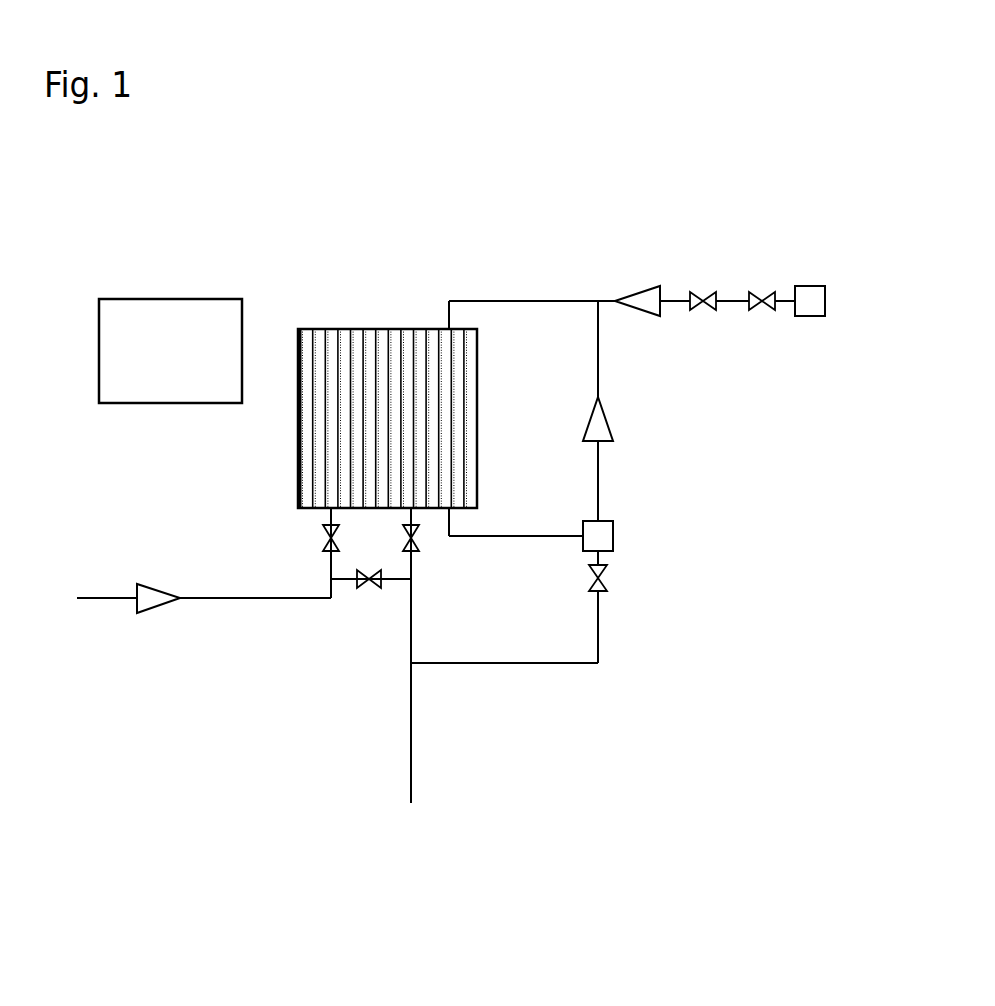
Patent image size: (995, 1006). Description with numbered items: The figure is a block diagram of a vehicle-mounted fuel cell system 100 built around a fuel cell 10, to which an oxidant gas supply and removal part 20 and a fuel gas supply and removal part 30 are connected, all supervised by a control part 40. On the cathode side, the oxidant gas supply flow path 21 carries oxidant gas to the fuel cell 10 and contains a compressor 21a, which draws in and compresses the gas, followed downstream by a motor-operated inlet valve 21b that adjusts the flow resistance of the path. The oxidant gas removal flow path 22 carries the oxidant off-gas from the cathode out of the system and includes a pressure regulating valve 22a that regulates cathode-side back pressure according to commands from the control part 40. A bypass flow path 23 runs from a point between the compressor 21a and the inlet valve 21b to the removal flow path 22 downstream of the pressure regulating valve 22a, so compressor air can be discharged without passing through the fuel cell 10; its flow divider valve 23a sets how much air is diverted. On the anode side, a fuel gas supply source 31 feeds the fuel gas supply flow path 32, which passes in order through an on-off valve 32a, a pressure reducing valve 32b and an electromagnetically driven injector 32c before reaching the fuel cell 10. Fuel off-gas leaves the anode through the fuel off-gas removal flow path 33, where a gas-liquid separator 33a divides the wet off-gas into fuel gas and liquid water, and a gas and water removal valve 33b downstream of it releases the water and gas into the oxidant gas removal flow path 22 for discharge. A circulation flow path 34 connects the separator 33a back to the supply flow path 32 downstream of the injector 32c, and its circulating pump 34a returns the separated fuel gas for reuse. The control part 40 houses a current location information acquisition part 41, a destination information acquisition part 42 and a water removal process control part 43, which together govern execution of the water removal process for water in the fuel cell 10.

The fuel cell system 100 is at (453, 201).
The fuel cell 10 is at (362, 328).
The oxidant gas supply and removal part 20 is at (274, 655).
The oxidant gas supply flow path 21 is at (204, 601).
The compressor 21a is at (156, 583).
The inlet valve 21b is at (325, 539).
The oxidant gas removal flow path 22 is at (437, 655).
The pressure regulating valve 22a is at (418, 545).
The bypass flow path 23 is at (371, 597).
The flow divider valve 23a is at (375, 586).
The fuel gas supply and removal part 30 is at (634, 448).
The fuel gas supply source 31 is at (812, 283).
The fuel gas supply flow path 32 is at (625, 284).
The on-off valve 32a is at (765, 292).
The pressure reducing valve 32b is at (710, 292).
The injector 32c is at (638, 285).
The fuel off-gas removal flow path 33 is at (550, 573).
The gas-liquid separator 33a is at (614, 537).
The gas and water removal valve 33b is at (605, 588).
The circulation flow path 34 is at (633, 411).
The circulating pump 34a is at (605, 410).
The control part 40 is at (170, 322).
The current location information acquisition part 41 is at (134, 353).
The destination information acquisition part 42 is at (170, 353).
The water removal process control part 43 is at (204, 353).